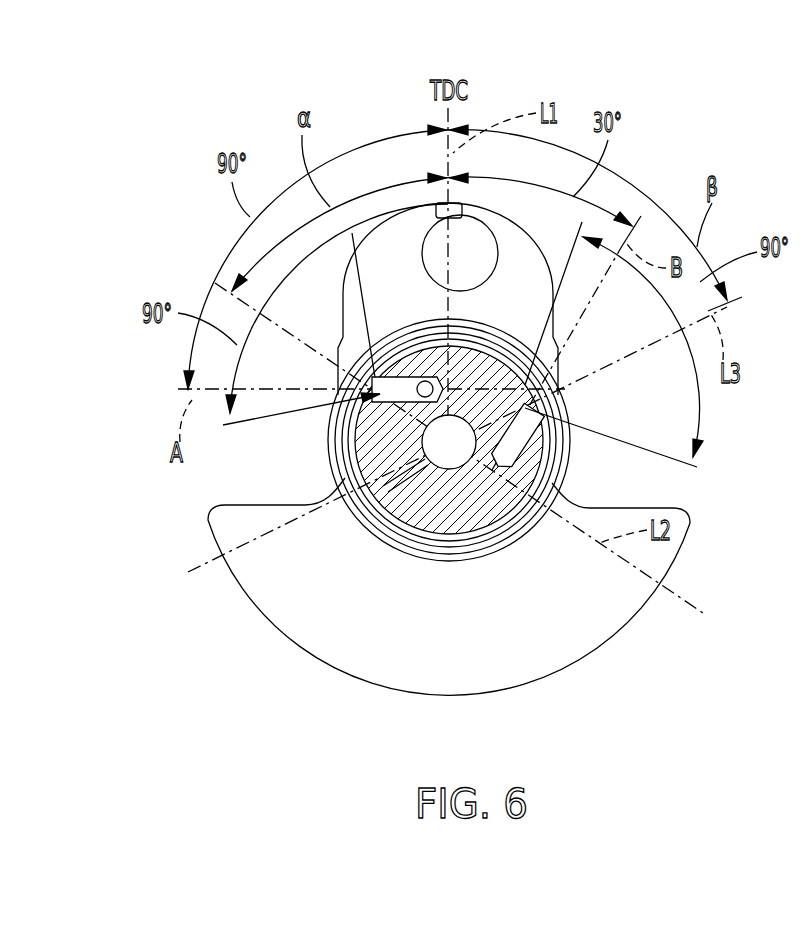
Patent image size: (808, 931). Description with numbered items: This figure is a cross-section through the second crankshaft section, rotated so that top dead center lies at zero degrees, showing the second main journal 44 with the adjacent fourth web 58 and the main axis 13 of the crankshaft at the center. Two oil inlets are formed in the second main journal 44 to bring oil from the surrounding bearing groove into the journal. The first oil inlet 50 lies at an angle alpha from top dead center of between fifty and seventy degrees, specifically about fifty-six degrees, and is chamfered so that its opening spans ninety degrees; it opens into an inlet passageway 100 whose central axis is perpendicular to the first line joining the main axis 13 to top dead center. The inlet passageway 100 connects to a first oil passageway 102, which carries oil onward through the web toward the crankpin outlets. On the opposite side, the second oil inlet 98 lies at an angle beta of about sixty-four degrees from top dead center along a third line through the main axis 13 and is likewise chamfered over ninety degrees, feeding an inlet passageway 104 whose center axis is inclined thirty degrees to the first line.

The main axis 13 is at (414, 526).
The second main journal 44 is at (480, 534).
The first oil inlet 50 is at (345, 383).
The fourth web 58 is at (395, 218).
The second oil inlet 98 is at (553, 413).
The inlet passageway 100 is at (349, 487).
The first oil passageway 102 is at (386, 518).
The inlet passageway 104 is at (545, 442).